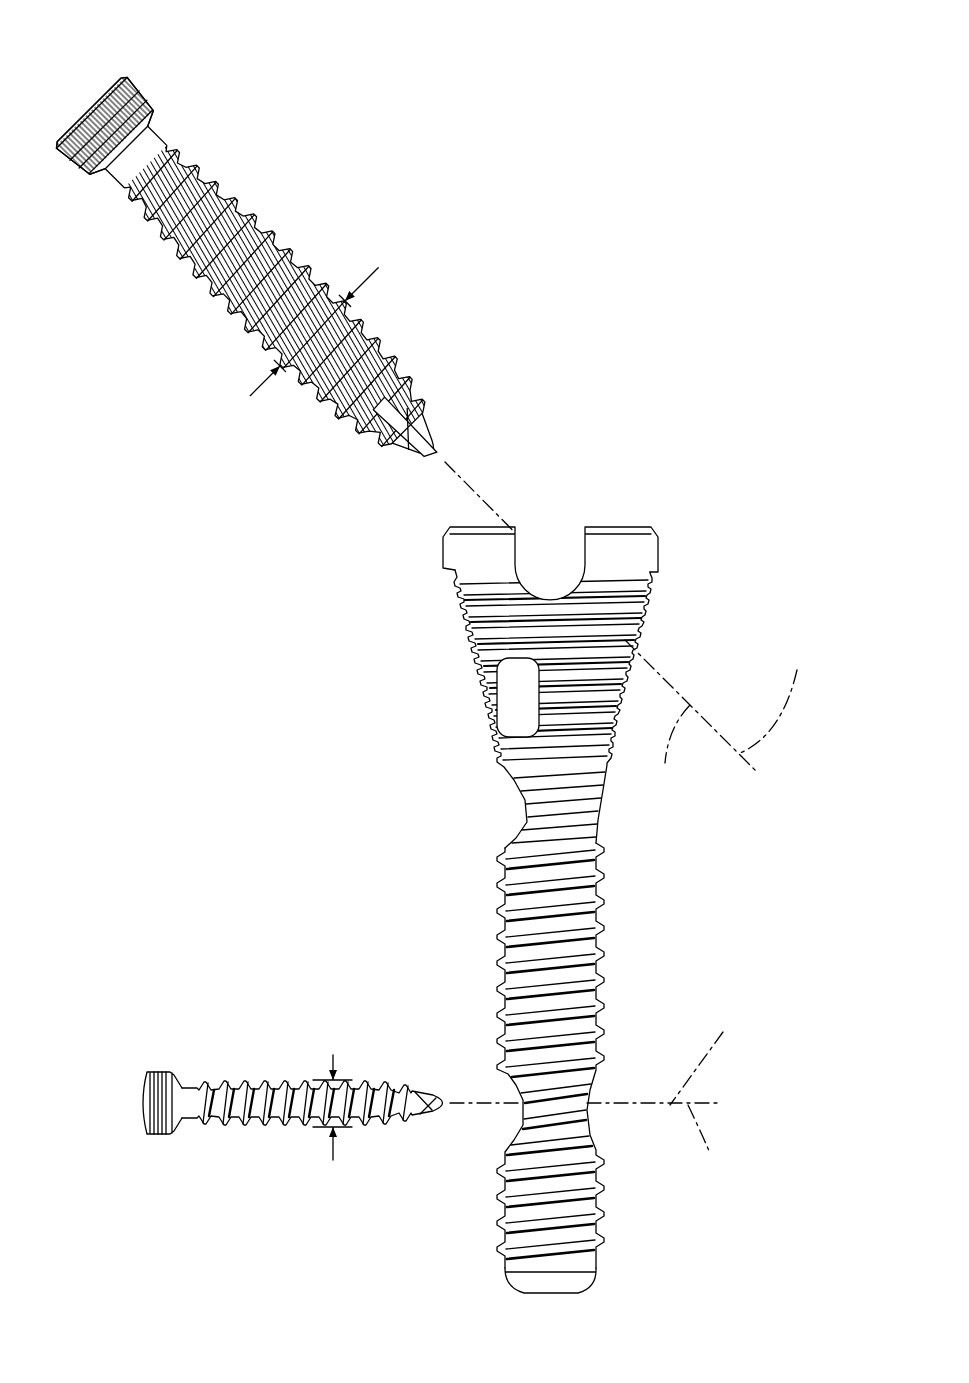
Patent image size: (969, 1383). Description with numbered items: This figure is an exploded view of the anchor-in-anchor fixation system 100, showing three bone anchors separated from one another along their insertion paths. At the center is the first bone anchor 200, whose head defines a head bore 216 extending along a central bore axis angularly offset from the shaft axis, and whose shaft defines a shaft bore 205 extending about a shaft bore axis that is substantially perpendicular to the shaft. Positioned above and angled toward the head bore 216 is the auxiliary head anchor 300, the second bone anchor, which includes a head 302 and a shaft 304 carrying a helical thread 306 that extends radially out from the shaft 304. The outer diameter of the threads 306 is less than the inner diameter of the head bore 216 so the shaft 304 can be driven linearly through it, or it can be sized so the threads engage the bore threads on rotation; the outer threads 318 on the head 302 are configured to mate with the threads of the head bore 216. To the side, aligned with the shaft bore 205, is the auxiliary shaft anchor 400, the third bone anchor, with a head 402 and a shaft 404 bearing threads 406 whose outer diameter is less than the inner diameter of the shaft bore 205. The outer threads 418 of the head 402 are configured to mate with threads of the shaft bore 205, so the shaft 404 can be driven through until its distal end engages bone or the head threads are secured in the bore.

The fixation system 100 is at (203, 713).
The first bone anchor 200 is at (657, 537).
The shaft bore 205 is at (588, 1117).
The head bore 216 is at (630, 588).
The auxiliary head anchor 300 is at (237, 200).
The head 302 is at (128, 72).
The shaft 304 is at (273, 240).
The helical thread 306 is at (308, 272).
The outer threads 318 is at (155, 110).
The auxiliary shaft anchor 400 is at (143, 1076).
The head 402 is at (155, 1138).
The shaft 404 is at (247, 1085).
The threads 406 is at (277, 1123).
The outer threads 418 is at (160, 1076).